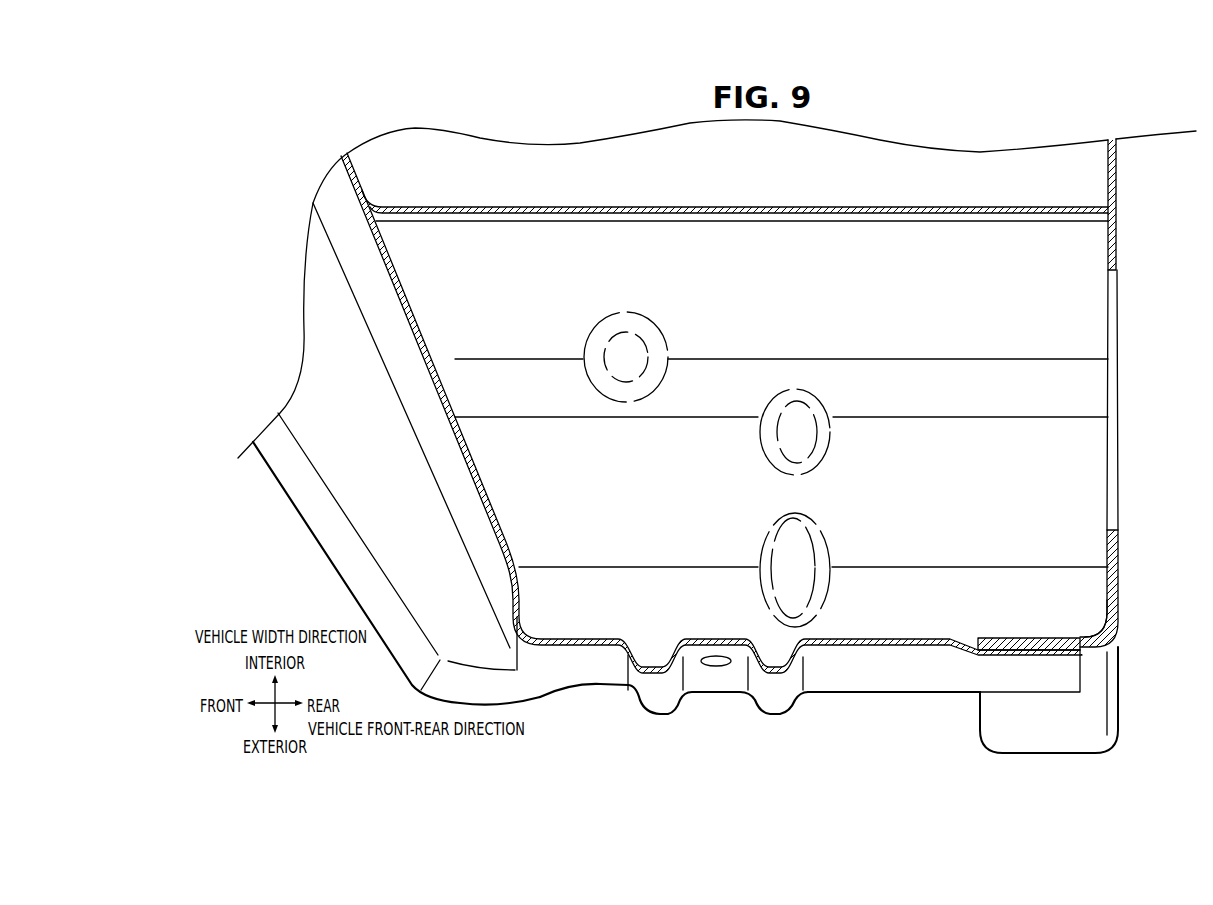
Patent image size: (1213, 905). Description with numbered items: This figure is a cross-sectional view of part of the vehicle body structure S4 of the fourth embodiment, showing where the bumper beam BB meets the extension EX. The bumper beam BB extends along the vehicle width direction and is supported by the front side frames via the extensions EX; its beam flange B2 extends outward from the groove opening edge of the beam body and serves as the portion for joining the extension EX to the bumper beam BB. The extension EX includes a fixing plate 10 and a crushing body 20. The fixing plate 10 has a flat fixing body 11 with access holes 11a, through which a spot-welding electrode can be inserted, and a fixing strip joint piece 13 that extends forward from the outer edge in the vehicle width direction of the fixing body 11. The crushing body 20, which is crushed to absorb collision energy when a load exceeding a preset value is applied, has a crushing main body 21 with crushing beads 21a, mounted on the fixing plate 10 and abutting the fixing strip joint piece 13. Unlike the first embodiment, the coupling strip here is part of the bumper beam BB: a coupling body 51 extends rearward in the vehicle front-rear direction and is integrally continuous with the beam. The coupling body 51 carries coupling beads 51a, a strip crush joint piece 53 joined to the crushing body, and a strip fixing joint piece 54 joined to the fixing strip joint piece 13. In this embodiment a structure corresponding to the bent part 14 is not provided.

The vehicle body structure S4 is at (332, 143).
The crushing main body 21 is at (735, 260).
The crushing body 20 is at (673, 330).
The crushing beads 21a is at (793, 437).
The extension EX is at (994, 143).
The fixing body 11 is at (1118, 193).
The fixing plate 10 is at (1151, 204).
The access holes 11a is at (1119, 300).
The fixing strip joint piece 13 is at (1002, 637).
The bent part 14 is at (1106, 627).
The coupling body 51 is at (907, 658).
The coupling beads 51a is at (655, 703).
The strip crush joint piece 53 is at (870, 693).
The strip fixing joint piece 54 is at (1017, 675).
The beam flange B2 is at (277, 438).
The bumper beam BB is at (288, 525).